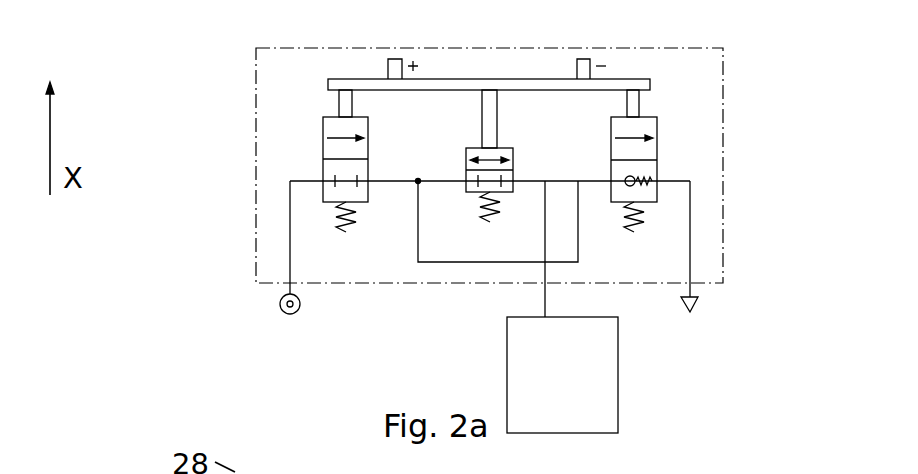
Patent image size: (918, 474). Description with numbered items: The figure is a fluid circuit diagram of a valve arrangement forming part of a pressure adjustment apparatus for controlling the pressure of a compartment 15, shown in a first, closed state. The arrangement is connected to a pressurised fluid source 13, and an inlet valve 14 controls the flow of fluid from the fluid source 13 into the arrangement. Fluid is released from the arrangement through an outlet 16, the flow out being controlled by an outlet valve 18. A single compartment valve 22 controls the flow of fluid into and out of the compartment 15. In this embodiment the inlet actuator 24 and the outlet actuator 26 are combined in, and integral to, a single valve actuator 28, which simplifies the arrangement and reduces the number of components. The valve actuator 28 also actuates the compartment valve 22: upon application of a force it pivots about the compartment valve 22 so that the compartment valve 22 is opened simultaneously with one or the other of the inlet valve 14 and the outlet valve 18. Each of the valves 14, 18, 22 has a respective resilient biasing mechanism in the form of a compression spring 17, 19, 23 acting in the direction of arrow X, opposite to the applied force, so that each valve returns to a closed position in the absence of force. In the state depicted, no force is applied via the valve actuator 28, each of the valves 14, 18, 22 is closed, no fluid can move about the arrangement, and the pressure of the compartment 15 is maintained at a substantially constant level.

The pressurised fluid source 13 is at (278, 307).
The inlet valve 14 is at (322, 147).
The compartment 15 is at (540, 387).
The outlet 16 is at (693, 208).
The compression spring 17 is at (337, 220).
The outlet valve 18 is at (657, 137).
The compression spring 19 is at (478, 206).
The compartment valve 22 is at (478, 148).
The compression spring 23 is at (642, 225).
The inlet actuator 24 is at (344, 82).
The outlet actuator 26 is at (647, 88).
The valve actuator 28 is at (540, 87).